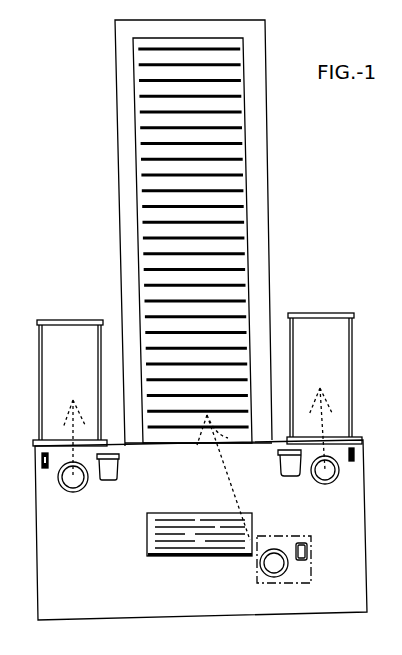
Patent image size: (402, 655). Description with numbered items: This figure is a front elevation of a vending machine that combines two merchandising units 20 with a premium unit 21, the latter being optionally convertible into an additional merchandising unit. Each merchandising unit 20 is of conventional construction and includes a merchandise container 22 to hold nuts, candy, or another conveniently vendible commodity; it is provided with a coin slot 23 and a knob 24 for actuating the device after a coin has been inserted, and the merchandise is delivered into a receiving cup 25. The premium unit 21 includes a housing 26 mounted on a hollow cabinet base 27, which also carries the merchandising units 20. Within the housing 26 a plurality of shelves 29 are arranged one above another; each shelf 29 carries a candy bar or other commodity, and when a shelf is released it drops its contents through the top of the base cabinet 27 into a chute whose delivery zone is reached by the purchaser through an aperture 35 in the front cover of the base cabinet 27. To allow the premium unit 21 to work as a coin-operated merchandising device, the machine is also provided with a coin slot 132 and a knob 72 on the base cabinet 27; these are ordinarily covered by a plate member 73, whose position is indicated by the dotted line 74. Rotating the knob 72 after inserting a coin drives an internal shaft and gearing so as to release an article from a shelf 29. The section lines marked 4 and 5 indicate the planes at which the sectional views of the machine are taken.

The section line 4- 4 is at (118, 18).
The section line 5- 5 is at (23, 552).
The merchandising units 20 is at (33, 437).
The premium unit 21 is at (275, 168).
The merchandise container 22 is at (318, 326).
The coin slot 23 is at (355, 456).
The knob 24 is at (325, 484).
The receiving cup 25 is at (290, 477).
The housing 26 is at (260, 210).
The hollow cabinet base 27 is at (362, 505).
The shelves 29 is at (246, 126).
The aperture 35 is at (176, 525).
The knob 72 is at (262, 570).
The plate member 73 is at (286, 538).
The dotted line 74 is at (297, 584).
The coin slot 132 is at (306, 559).